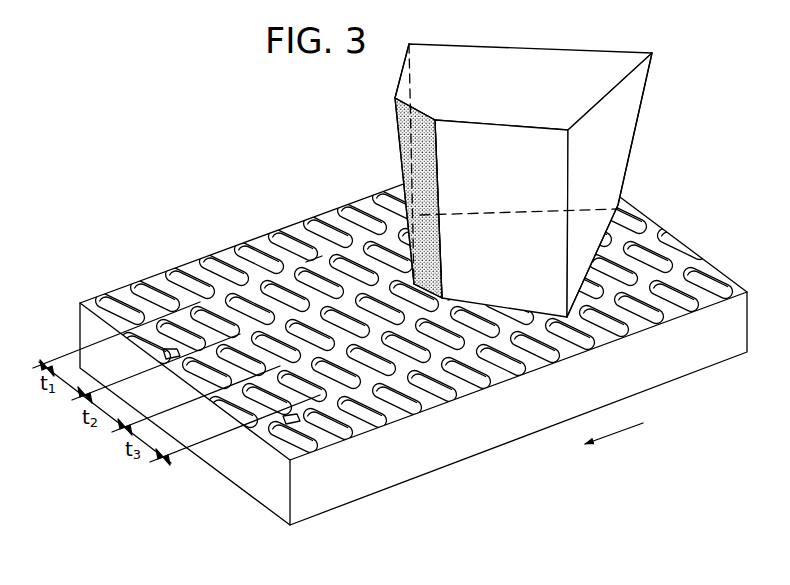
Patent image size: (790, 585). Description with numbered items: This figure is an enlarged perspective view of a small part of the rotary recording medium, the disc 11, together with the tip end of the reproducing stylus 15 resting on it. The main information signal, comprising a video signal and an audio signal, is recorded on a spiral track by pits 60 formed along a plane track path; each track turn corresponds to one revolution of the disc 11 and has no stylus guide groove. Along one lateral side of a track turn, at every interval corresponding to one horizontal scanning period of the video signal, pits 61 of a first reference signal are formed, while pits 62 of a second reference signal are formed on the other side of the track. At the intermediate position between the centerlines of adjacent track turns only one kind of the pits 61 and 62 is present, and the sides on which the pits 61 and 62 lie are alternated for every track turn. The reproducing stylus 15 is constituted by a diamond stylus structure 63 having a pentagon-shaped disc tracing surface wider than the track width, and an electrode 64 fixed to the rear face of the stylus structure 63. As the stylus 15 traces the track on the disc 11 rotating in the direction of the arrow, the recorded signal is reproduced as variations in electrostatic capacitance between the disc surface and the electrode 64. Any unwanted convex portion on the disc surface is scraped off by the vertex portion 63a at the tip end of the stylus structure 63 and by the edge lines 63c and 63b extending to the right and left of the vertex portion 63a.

The disc 11 is at (157, 268).
The reproducing stylus 15 is at (397, 84).
The pits 60 is at (245, 248).
The pits of first reference signal 61 is at (313, 266).
The pits of second reference signal 62 is at (172, 362).
The diamond stylus structure 63 is at (531, 180).
The vertex portion 63a is at (620, 207).
The edge line 63b is at (513, 212).
The edge line 63c is at (610, 232).
The electrode 64 is at (403, 140).